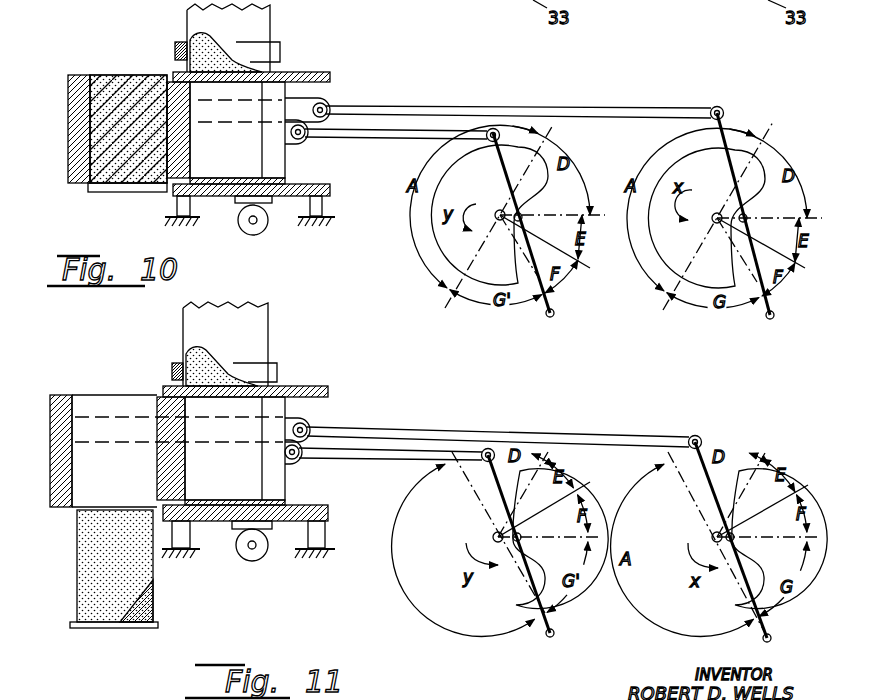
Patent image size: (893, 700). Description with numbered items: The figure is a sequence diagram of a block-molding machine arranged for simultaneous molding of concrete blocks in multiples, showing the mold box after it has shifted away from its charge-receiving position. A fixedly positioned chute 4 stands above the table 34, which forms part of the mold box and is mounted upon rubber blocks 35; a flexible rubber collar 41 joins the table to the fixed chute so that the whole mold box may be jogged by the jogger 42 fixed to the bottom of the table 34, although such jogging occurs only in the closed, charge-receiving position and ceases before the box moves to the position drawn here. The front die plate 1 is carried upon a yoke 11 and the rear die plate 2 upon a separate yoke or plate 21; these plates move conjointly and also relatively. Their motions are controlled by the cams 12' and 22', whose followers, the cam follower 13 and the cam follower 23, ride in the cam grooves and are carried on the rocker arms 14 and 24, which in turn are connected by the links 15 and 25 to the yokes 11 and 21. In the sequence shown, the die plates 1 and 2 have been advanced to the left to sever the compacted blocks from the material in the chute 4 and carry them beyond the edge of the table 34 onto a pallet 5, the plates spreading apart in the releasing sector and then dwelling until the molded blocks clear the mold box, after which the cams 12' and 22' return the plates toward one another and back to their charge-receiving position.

In FIG. 10, the front die plate 1 is at (92, 76).
In FIG. 11, the front die plate 1 is at (67, 395).
In FIG. 10, the rear die plate 2 is at (165, 76).
In FIG. 11, the rear die plate 2 is at (157, 465).
In FIG. 10, the chute 4 is at (195, 20).
In FIG. 11, the chute 4 is at (265, 327).
In FIG. 10, the pallet 5 is at (112, 192).
In FIG. 11, the pallet 5 is at (110, 628).
In FIG. 10, the yoke 11 is at (70, 108).
In FIG. 11, the yoke 11 is at (54, 394).
In FIG. 10, the cam 12' is at (715, 192).
In FIG. 11, the cam 12' is at (727, 549).
In FIG. 10, the cam follower 13 is at (725, 203).
In FIG. 11, the cam follower 13 is at (750, 528).
In FIG. 10, the rocker arm 14 is at (764, 214).
In FIG. 11, the rocker arm 14 is at (752, 540).
In FIG. 10, the link 15 is at (522, 106).
In FIG. 11, the link 15 is at (525, 437).
In FIG. 10, the yoke or plate 21 is at (322, 89).
In FIG. 11, the yoke or plate 21 is at (284, 405).
In FIG. 10, the cam 22' is at (473, 219).
In FIG. 11, the cam 22' is at (506, 550).
In FIG. 10, the crank pin 23 is at (540, 206).
In FIG. 11, the crank pin 23 is at (536, 529).
In FIG. 10, the rocker arm 24 is at (542, 223).
In FIG. 11, the rocker arm 24 is at (519, 544).
In FIG. 10, the link 25 is at (385, 140).
In FIG. 11, the link 25 is at (390, 459).
In FIG. 10, the table 34 is at (174, 197).
In FIG. 11, the table 34 is at (326, 506).
In FIG. 10, the rubber blocks 35 is at (190, 207).
In FIG. 11, the rubber blocks 35 is at (190, 534).
In FIG. 10, the rubber collar 41 is at (175, 50).
In FIG. 11, the rubber collar 41 is at (173, 367).
In FIG. 10, the jogger 42 is at (263, 230).
In FIG. 11, the jogger 42 is at (244, 560).